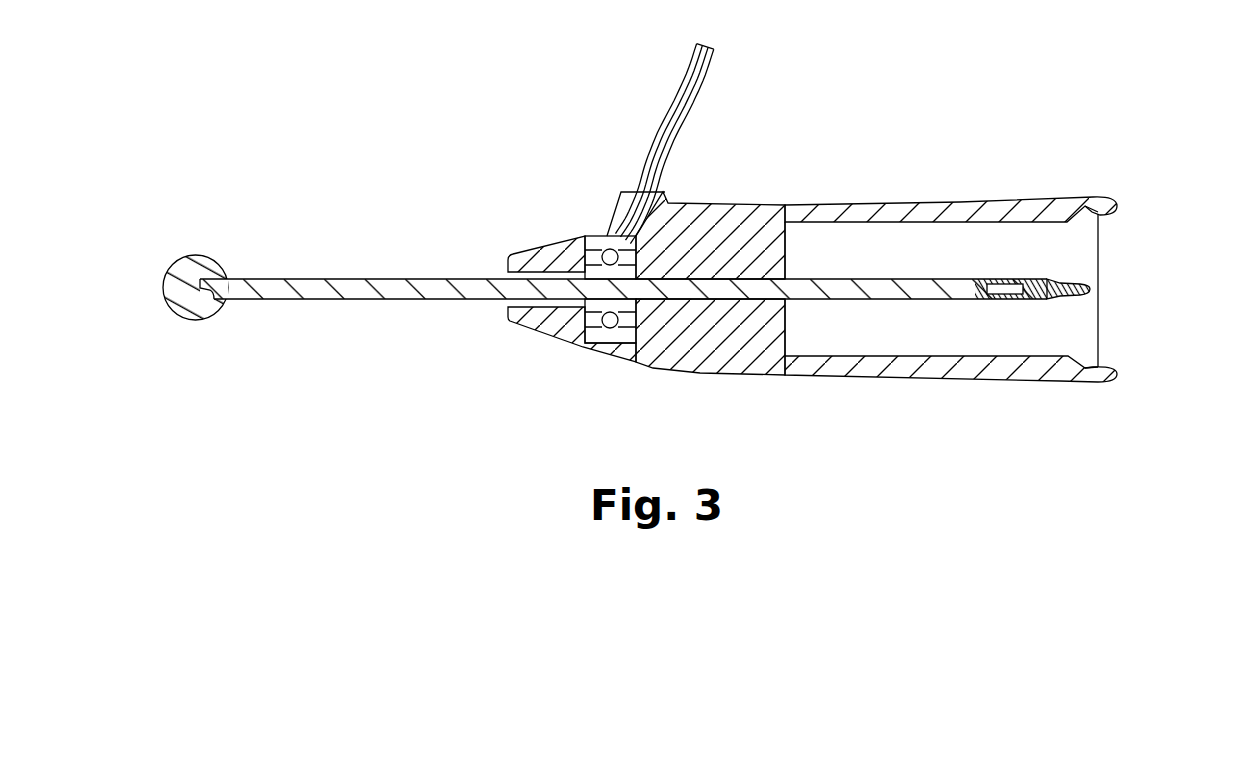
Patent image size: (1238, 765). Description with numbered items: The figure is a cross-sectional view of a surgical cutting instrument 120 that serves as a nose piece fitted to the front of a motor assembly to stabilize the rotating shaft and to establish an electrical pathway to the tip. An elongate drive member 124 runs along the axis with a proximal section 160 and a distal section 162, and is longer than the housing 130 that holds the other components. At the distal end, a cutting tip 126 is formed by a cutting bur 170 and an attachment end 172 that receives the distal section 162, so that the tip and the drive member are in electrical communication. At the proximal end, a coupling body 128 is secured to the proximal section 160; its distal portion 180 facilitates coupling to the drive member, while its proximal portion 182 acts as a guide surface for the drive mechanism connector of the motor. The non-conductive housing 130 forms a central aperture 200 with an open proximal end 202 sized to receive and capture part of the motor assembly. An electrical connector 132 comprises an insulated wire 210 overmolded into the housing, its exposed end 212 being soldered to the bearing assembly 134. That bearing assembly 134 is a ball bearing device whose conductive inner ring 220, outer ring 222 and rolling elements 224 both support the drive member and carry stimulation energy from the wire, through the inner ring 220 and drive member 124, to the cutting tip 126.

The surgical cutting instrument 120 is at (516, 34).
The elongate drive member 124 is at (940, 250).
The cutting tip 126 is at (178, 248).
The coupling body 128 is at (1068, 270).
The housing 130 is at (803, 202).
The electrical connector 132 is at (655, 228).
The bearing assembly 134 is at (572, 320).
The proximal section 160 is at (952, 292).
The distal section 162 is at (480, 278).
The cutting bur 170 is at (173, 317).
The attachment end 172 is at (213, 297).
The distal portion 180 is at (999, 300).
The proximal portion 182 is at (1098, 290).
The central aperture 200 is at (868, 345).
The open proximal end 202 is at (1104, 342).
The insulated wire 210 is at (655, 78).
The exposed end 212 is at (614, 232).
The inner ring 220 is at (622, 307).
The outer ring 222 is at (622, 330).
The rolling elements 224 is at (602, 330).